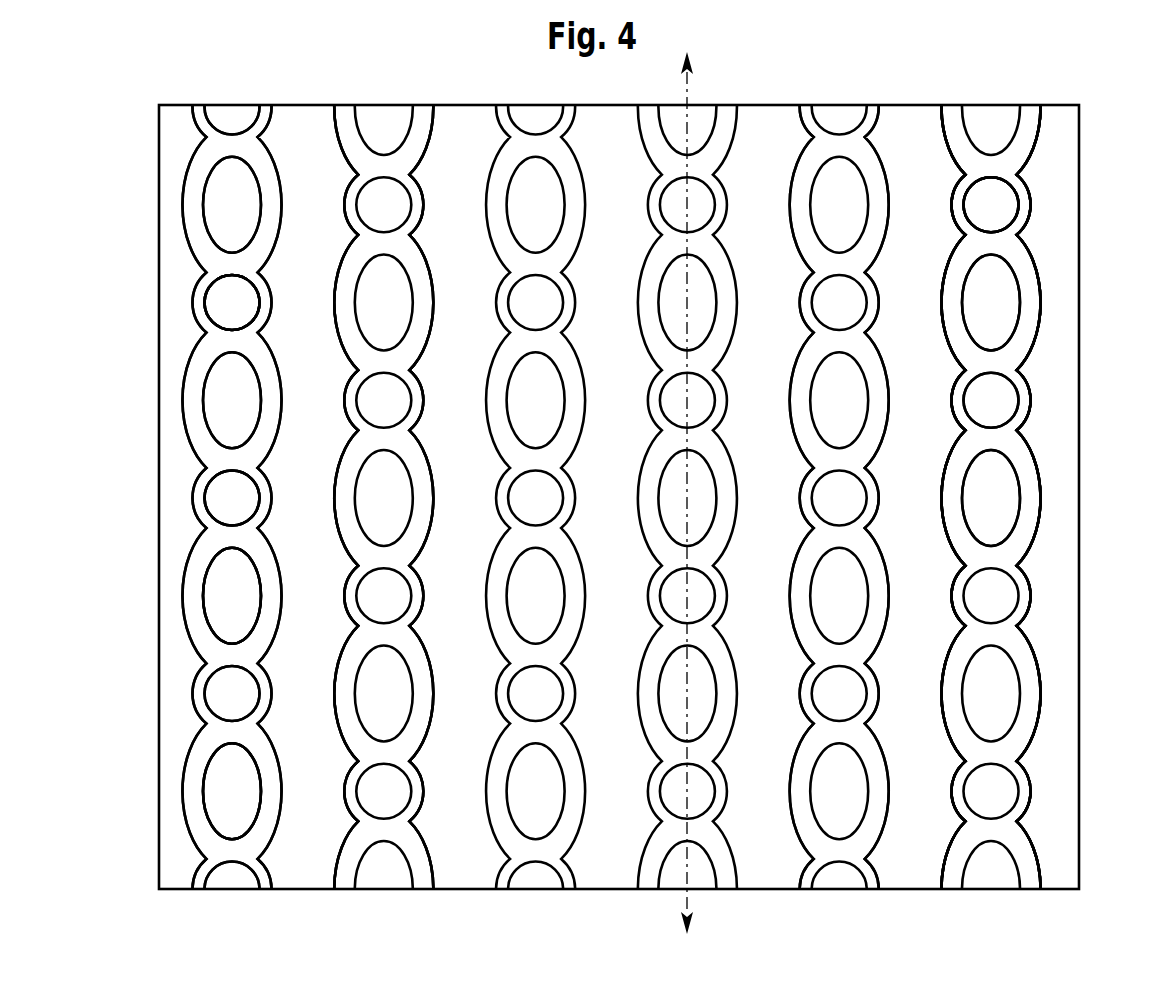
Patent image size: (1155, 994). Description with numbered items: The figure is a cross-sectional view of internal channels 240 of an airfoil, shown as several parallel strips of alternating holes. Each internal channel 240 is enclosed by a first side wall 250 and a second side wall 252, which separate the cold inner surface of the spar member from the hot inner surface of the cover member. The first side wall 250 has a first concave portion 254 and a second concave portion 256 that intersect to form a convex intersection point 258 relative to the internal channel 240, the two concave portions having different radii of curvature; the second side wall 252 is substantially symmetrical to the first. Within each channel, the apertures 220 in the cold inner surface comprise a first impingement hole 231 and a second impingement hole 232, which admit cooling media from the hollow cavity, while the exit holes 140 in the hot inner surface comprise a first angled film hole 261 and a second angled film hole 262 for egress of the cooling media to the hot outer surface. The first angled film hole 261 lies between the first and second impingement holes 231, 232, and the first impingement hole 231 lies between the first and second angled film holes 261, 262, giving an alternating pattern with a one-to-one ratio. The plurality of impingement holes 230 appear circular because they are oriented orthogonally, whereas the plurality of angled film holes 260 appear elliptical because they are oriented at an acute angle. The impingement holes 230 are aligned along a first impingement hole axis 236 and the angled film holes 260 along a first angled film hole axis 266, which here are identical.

The exit holes 140 is at (205, 173).
The apertures 220 is at (217, 309).
The impingement holes 230 is at (214, 333).
The angled film holes 260 is at (210, 767).
The first side wall 250 is at (358, 174).
The second side wall 252 is at (437, 124).
The first concave portion 254 is at (950, 252).
The second concave portion 256 is at (949, 188).
The convex intersection point 258 is at (970, 229).
The second impingement hole 232 is at (996, 236).
The first angled film hole 261 is at (1006, 342).
The first impingement hole 231 is at (993, 430).
The second angled film hole 262 is at (1010, 536).
The first impingement hole axis 236 is at (626, 494).
The first angled film hole axis 266 is at (677, 896).
The internal channel 240 is at (877, 775).